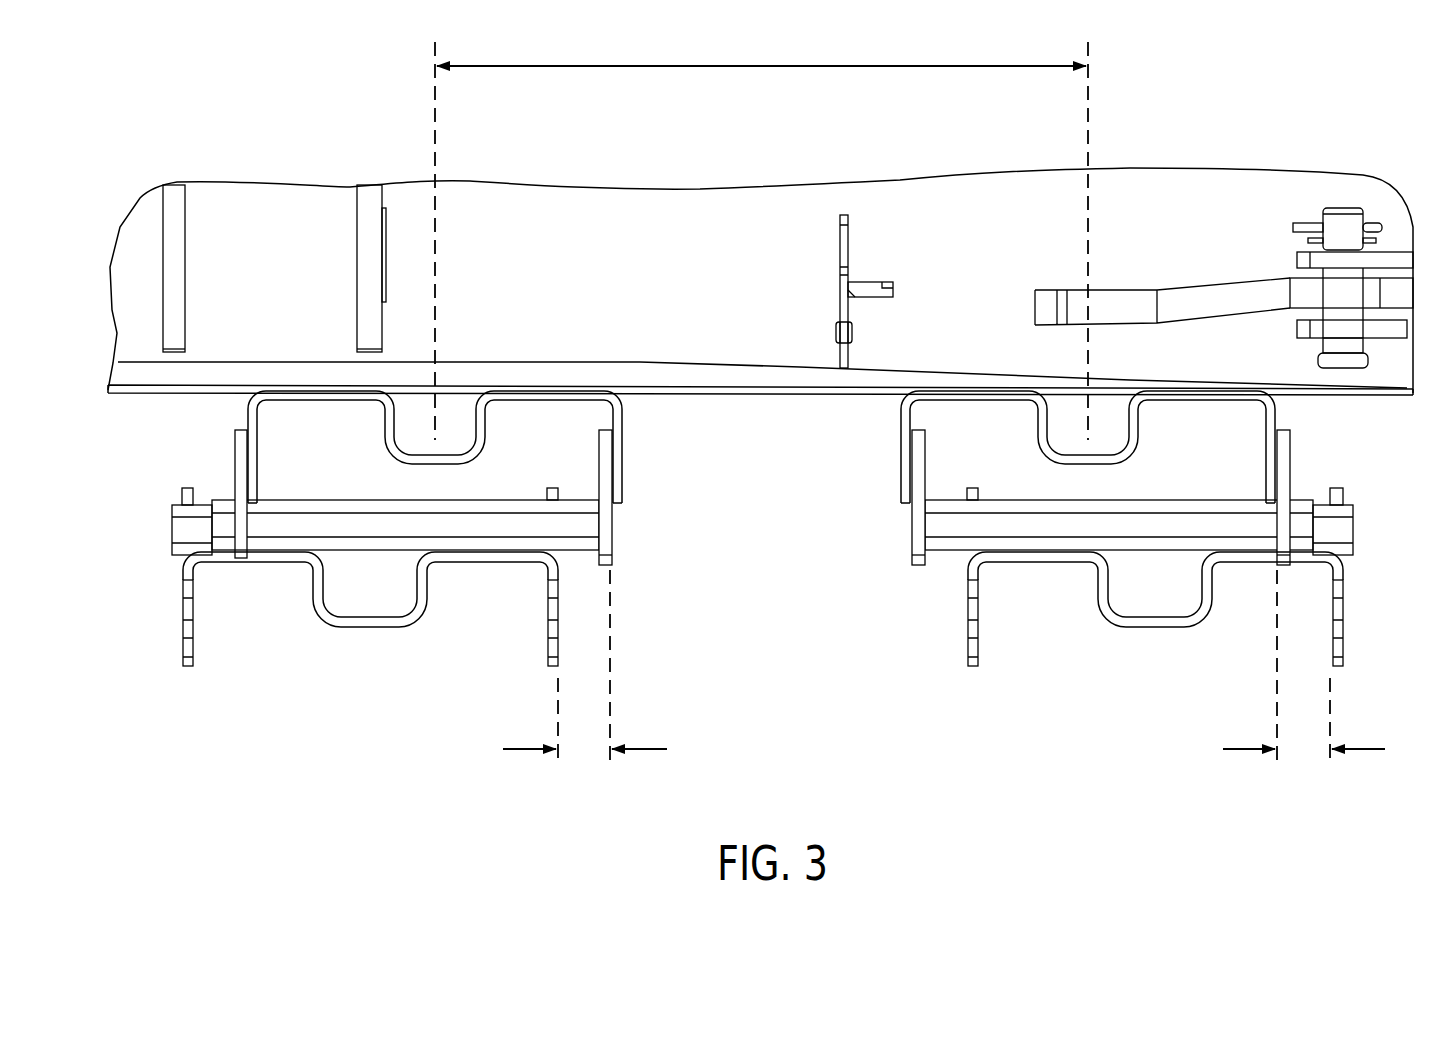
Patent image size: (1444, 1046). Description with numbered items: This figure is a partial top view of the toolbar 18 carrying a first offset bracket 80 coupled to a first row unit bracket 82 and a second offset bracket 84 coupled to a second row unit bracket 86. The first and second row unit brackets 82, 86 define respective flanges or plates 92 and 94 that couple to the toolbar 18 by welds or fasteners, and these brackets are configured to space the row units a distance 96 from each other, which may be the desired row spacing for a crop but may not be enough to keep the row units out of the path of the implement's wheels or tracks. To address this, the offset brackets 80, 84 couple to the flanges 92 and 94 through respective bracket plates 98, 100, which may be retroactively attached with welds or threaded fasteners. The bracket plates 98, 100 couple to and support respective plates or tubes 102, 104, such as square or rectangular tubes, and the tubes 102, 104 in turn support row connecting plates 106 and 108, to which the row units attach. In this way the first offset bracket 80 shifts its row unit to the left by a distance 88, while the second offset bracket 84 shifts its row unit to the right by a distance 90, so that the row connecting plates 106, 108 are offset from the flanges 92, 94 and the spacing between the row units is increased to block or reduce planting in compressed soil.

The toolbar 18 is at (532, 228).
The first offset bracket 80 is at (403, 614).
The first row unit bracket 82 is at (326, 340).
The second offset bracket 84 is at (1128, 614).
The second row unit bracket 86 is at (998, 340).
The distance 88 is at (587, 760).
The distance 90 is at (1305, 760).
The flange 92 is at (255, 465).
The flange 94 is at (906, 465).
The distance 96 is at (763, 66).
The bracket plate 98 is at (242, 477).
The bracket plate 100 is at (922, 477).
The tube 102 is at (450, 532).
The tube 104 is at (1055, 530).
The row connecting plate 106 is at (178, 647).
The row connecting plate 108 is at (965, 647).